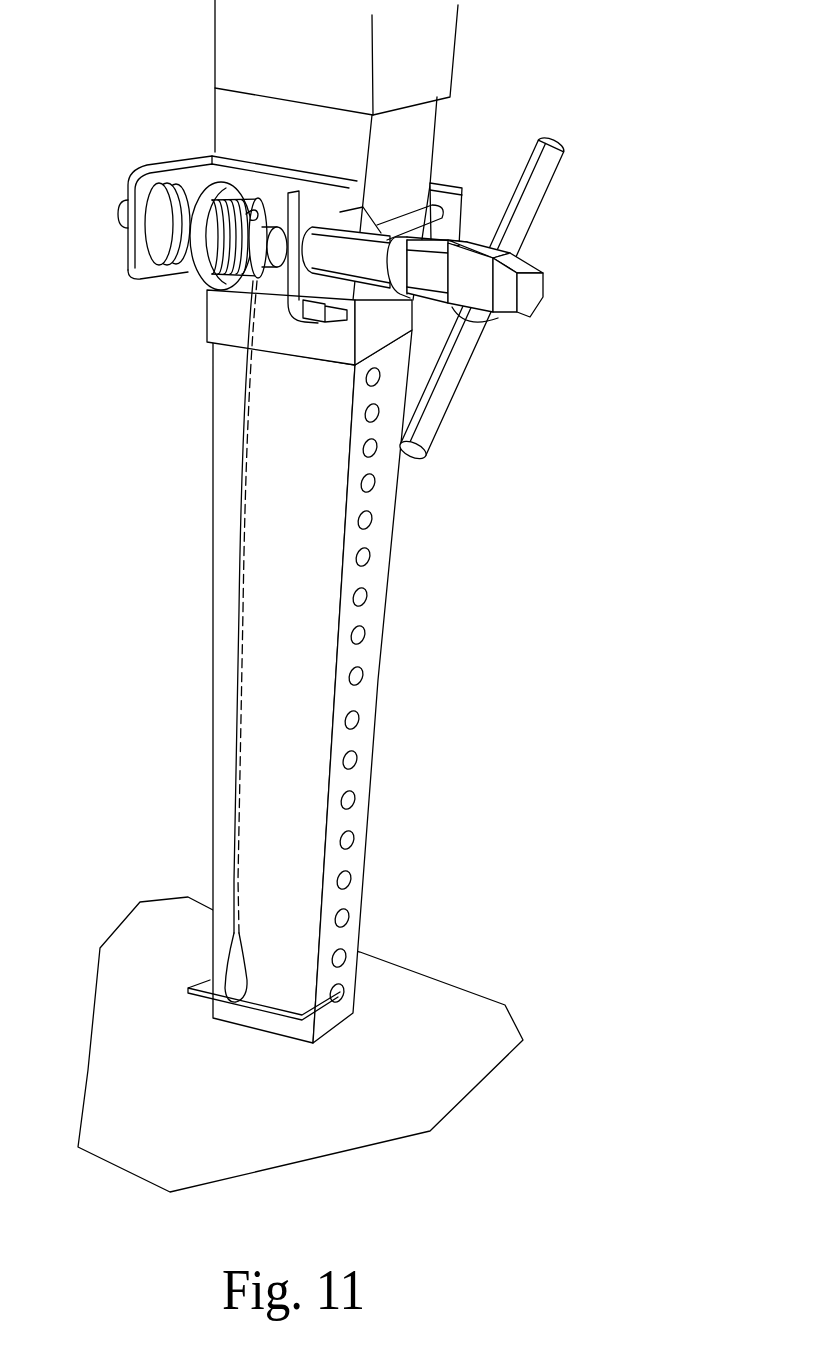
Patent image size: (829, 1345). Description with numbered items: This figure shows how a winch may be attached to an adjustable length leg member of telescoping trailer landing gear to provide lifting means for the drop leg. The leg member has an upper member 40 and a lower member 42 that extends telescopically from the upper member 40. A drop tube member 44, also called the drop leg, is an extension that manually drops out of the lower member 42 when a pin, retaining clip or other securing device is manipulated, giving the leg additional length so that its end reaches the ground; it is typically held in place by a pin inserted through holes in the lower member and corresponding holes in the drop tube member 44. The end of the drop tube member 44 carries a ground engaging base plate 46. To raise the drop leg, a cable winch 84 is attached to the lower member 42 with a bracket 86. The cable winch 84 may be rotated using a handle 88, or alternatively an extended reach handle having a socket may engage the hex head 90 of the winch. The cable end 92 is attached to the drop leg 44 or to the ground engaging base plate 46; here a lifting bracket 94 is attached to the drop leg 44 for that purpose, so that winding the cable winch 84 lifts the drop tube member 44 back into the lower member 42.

The upper member 40 is at (248, 33).
The lower member 42 is at (207, 313).
The drop tube member 44 is at (383, 657).
The ground engaging base plate 46 is at (407, 1110).
The cable winch 84 is at (128, 243).
The bracket 86 is at (447, 183).
The handle 88 is at (555, 168).
The hex head 90 is at (547, 292).
The cable end 92 is at (226, 963).
The lifting bracket 94 is at (325, 1005).